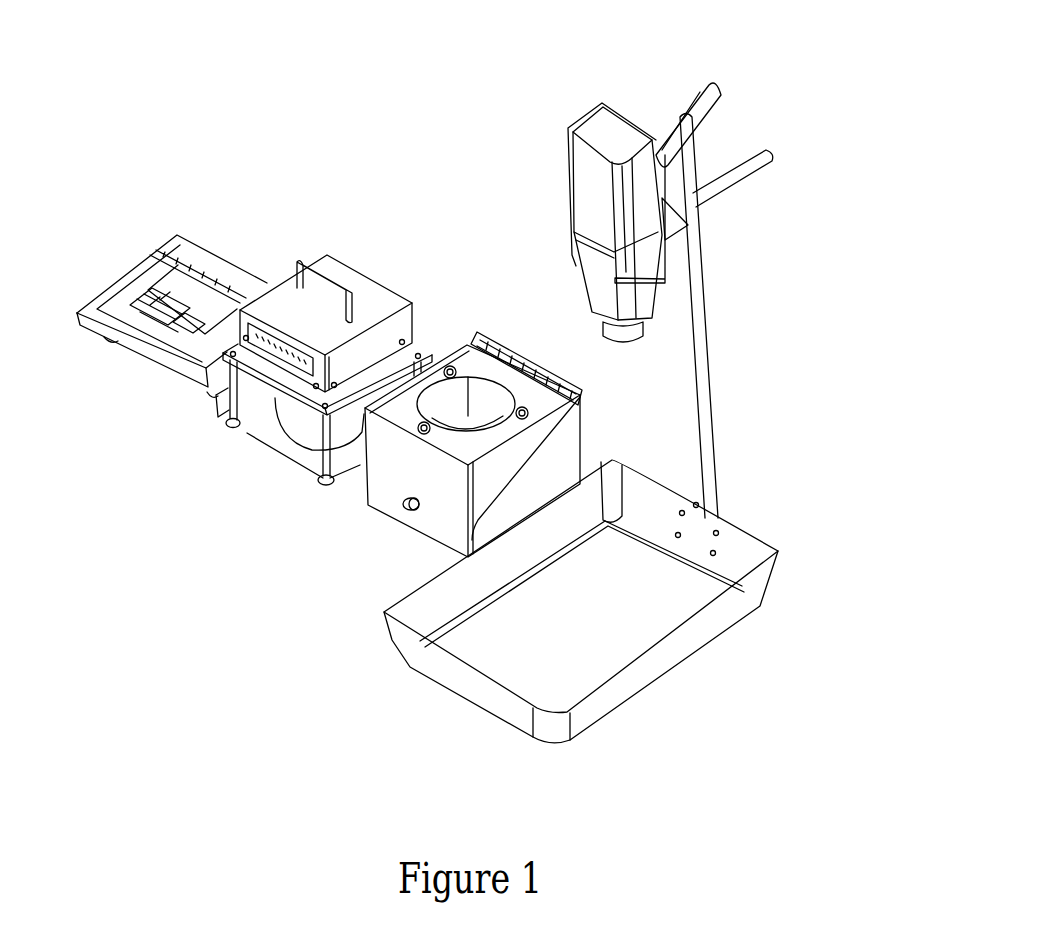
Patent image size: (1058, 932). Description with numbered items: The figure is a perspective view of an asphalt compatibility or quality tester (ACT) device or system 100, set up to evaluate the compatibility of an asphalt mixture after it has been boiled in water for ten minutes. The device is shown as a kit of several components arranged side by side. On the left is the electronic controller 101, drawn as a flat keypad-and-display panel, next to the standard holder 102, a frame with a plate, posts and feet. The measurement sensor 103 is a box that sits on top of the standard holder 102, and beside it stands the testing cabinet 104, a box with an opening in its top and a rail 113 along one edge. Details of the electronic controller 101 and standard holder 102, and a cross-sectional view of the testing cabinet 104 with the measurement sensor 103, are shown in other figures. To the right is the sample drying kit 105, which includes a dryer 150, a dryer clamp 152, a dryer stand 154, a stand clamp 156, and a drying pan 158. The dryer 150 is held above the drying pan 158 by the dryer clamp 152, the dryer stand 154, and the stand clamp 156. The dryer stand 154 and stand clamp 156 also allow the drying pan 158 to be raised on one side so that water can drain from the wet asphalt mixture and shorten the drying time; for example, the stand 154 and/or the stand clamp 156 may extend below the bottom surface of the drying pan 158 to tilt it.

The asphalt compatibility or quality tester (ACT) device or system 100 is at (375, 120).
The electronic controller 101 is at (170, 263).
The standard holder 102 is at (312, 455).
The measurement sensor 103 is at (310, 300).
The testing cabinet 104 is at (417, 457).
The sample drying kit 105 is at (768, 358).
The rail 113 is at (578, 428).
The dryer 150 is at (622, 115).
The dryer clamp 152 is at (686, 210).
The dryer stand 154 is at (708, 308).
The stand clamp 156 is at (724, 522).
The drying pan 158 is at (600, 632).